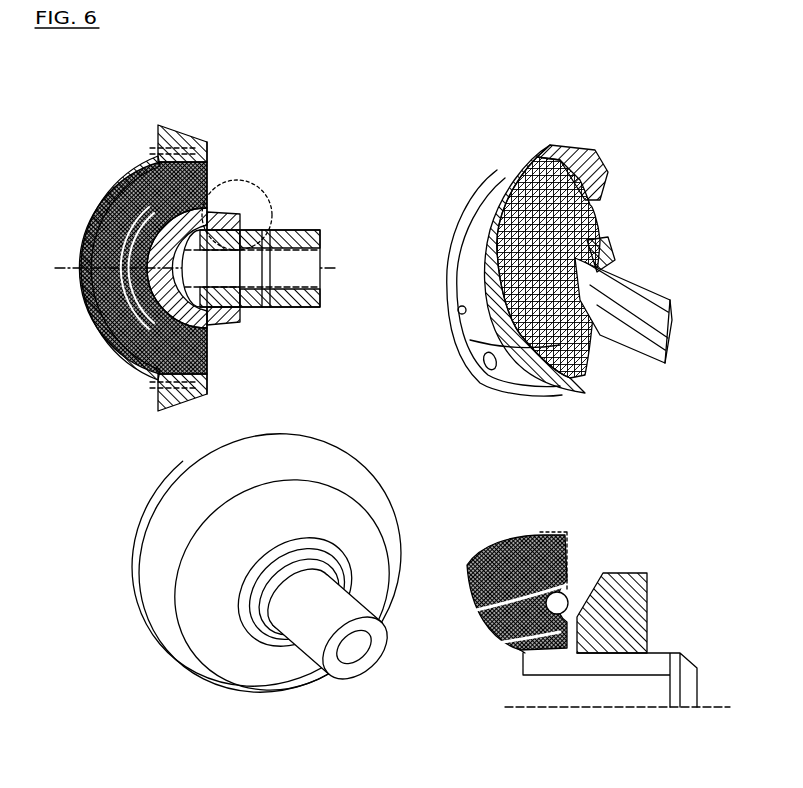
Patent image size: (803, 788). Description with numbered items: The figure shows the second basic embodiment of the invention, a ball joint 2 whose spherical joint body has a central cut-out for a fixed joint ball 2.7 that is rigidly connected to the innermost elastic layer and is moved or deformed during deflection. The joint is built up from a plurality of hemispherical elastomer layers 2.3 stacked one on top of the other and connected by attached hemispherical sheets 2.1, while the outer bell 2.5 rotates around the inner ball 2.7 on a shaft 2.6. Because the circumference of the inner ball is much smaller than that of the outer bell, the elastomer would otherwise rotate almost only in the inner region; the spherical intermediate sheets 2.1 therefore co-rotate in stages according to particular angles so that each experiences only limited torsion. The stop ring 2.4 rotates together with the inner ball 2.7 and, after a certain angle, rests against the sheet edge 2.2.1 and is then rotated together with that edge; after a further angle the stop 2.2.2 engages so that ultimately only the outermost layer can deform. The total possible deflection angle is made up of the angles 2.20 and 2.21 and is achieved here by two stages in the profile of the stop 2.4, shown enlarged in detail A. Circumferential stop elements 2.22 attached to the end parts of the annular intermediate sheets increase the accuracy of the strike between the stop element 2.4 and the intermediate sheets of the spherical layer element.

The bearing element 2 is at (213, 538).
The hemispherical sheet 2.1 is at (497, 227).
The deflection angle 2.20 is at (212, 225).
The deflection angle 2.21 is at (210, 313).
The circumferential stop element 2.22 is at (535, 562).
The sheet edge 2.2.1 is at (213, 318).
The stop 2.2.2 is at (168, 378).
The hemispherical elastomer layer 2.3 is at (200, 227).
The stop ring 2.4 is at (233, 226).
The outer bell 2.5 is at (563, 377).
The shaft 2.6 is at (657, 360).
The joint ball 2.7 is at (625, 262).
The detail region A is at (257, 230).